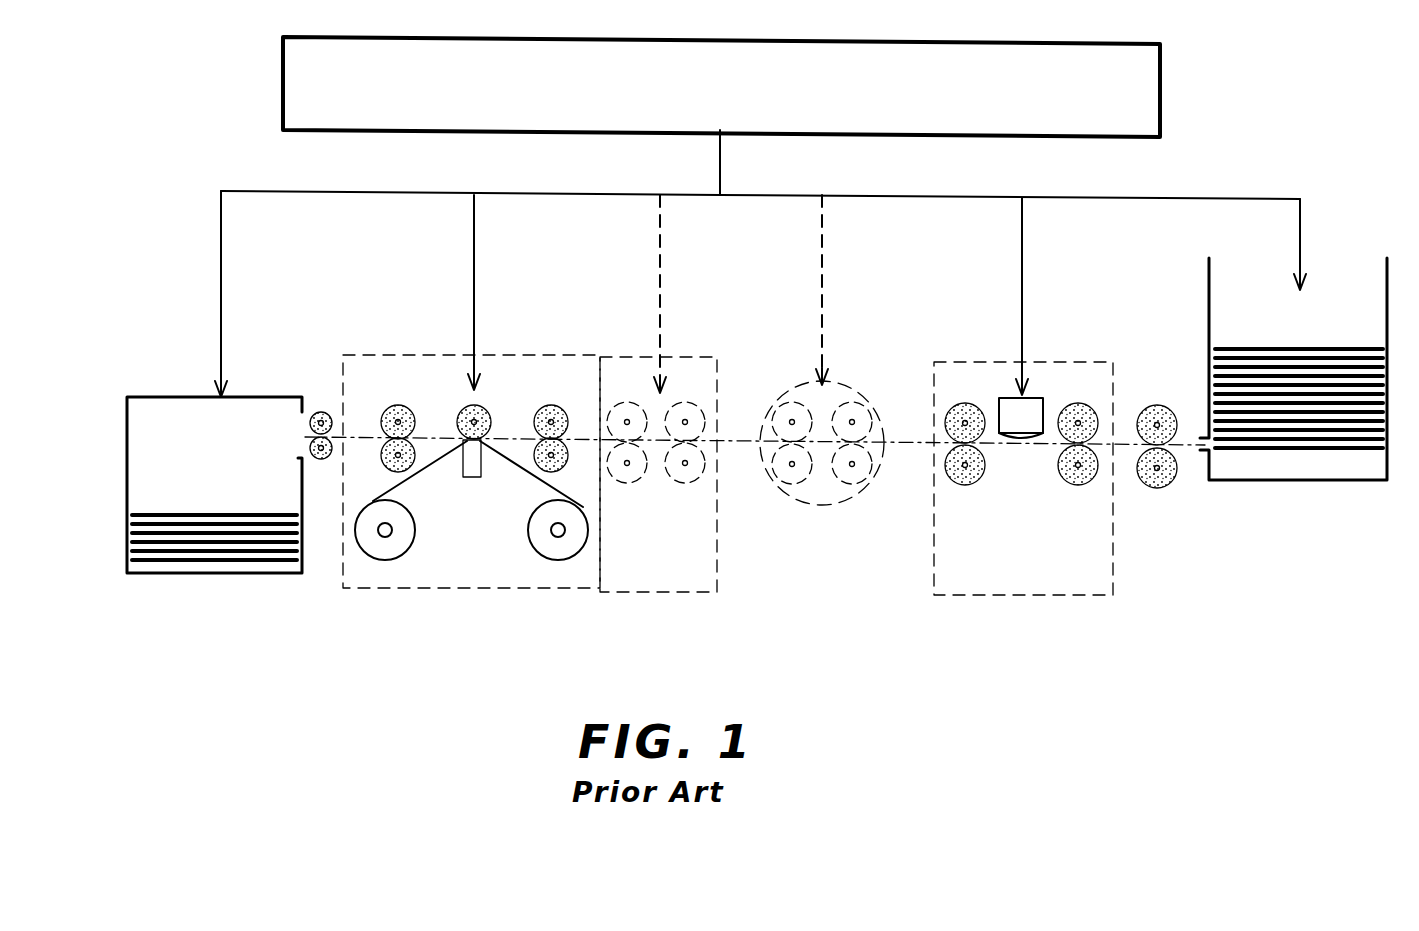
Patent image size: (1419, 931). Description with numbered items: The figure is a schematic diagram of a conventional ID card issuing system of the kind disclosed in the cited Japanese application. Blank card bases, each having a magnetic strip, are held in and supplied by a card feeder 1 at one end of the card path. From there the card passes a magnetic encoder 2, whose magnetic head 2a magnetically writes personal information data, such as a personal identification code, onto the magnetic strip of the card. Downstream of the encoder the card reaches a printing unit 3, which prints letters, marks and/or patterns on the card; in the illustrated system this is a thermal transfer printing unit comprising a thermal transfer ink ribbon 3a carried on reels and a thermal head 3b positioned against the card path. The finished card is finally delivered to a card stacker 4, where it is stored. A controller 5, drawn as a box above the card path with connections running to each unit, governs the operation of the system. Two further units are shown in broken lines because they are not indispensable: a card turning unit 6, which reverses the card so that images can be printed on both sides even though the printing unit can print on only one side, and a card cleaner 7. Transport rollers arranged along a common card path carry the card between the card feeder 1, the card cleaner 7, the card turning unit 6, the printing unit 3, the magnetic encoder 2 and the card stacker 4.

The card feeder 1 is at (1268, 468).
The magnetic encoder 2 is at (1023, 483).
The magnetic head 2a is at (1022, 412).
The printing unit 3 is at (471, 514).
The thermal transfer ink ribbon 3a is at (548, 554).
The thermal head 3b is at (474, 478).
The card stacker 4 is at (205, 572).
The controller 5 is at (1142, 97).
The card turning unit 6 is at (823, 493).
The card cleaner 7 is at (658, 593).